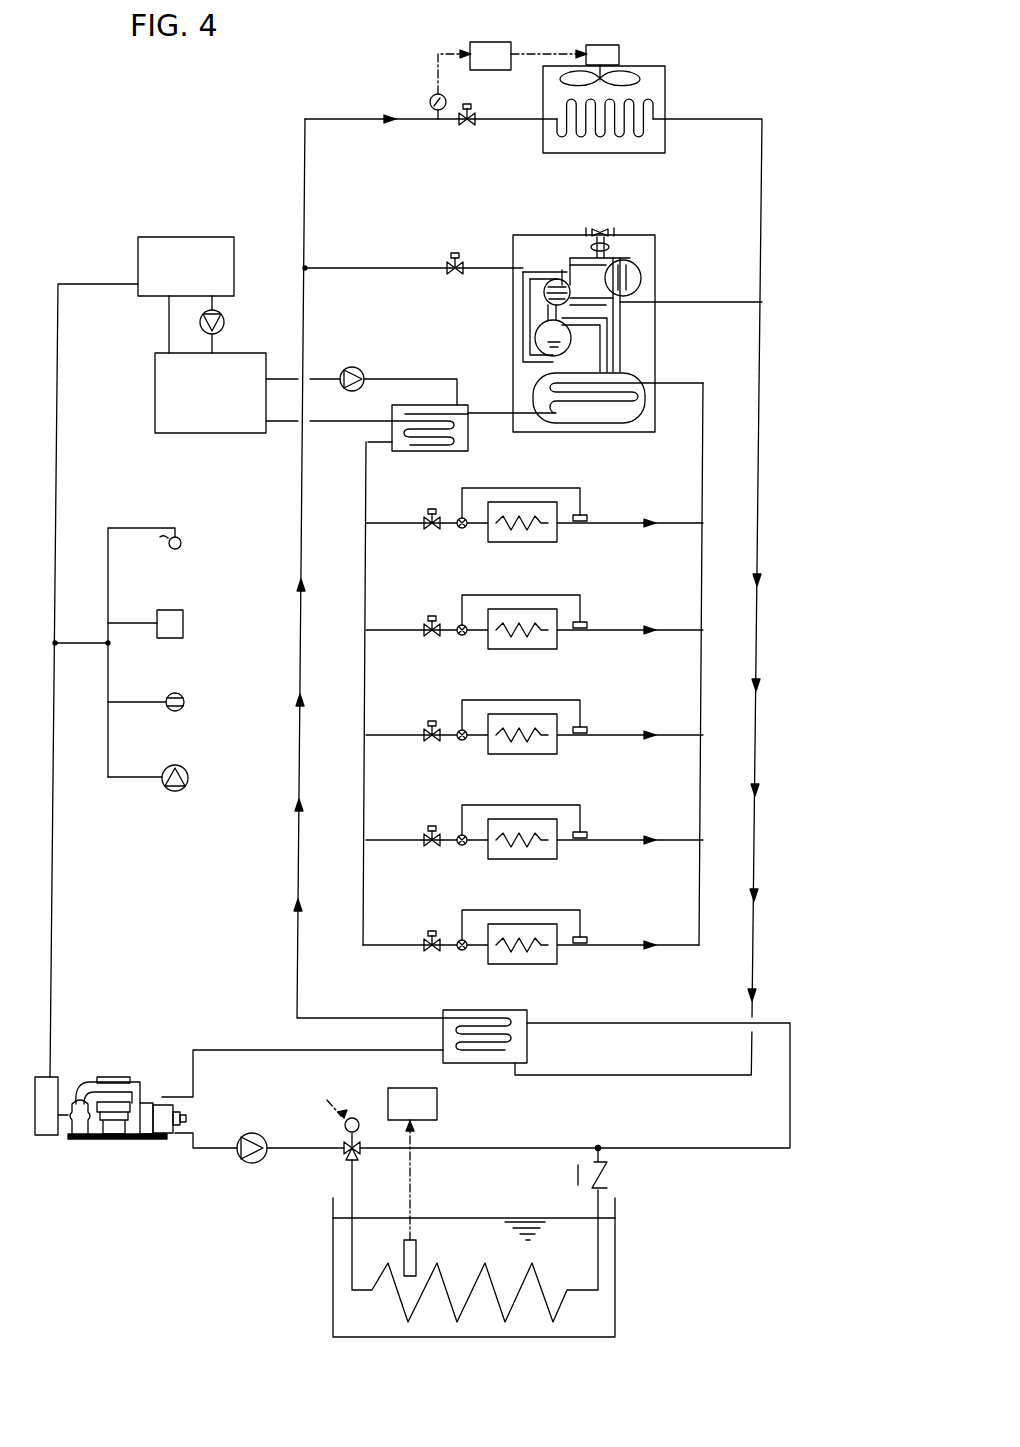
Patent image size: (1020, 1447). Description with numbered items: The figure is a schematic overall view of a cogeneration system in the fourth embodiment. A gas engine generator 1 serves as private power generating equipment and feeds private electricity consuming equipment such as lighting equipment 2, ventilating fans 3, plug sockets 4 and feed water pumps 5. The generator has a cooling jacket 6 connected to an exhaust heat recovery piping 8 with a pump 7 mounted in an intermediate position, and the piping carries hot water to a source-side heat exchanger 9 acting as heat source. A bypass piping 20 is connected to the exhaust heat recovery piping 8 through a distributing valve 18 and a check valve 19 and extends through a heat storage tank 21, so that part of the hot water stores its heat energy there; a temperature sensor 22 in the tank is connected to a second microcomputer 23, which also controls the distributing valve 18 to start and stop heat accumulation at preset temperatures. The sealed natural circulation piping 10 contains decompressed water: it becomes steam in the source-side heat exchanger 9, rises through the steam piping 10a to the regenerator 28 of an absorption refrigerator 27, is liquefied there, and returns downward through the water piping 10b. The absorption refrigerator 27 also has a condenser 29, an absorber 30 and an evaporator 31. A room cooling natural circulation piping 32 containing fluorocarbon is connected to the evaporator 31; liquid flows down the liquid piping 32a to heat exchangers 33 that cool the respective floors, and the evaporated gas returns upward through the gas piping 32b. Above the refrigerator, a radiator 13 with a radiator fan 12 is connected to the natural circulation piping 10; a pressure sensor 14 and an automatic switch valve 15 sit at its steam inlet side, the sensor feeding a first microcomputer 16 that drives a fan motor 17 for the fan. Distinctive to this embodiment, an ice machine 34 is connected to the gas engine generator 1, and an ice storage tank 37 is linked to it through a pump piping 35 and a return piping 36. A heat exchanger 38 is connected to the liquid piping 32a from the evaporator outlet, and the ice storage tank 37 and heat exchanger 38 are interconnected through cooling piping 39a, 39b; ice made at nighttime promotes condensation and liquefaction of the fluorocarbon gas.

The gas engine generator 1 is at (100, 1072).
The lighting equipment 2 is at (182, 541).
The ventilating fans 3 is at (186, 623).
The plug sockets 4 is at (184, 700).
The feed water pumps 5 is at (188, 772).
The cooling jacket 6 is at (163, 1140).
The pump 7 is at (255, 1133).
The exhaust heat recovery piping 8 is at (216, 1151).
The source-side heat exchanger 9 is at (527, 1045).
The natural circulation piping 10 is at (766, 700).
The steam piping 10a is at (300, 880).
The water piping 10b is at (668, 597).
The radiator fan 12 is at (644, 84).
The radiator 13 is at (648, 162).
The pressure sensor 14 is at (428, 102).
The automatic switch valve 15 is at (466, 128).
The first microcomputer 16 is at (495, 70).
The fan motor 17 is at (626, 53).
The distributing valve 18 is at (344, 1158).
The check valve 19 is at (606, 1175).
The bypass piping 20 is at (352, 1188).
The heat storage tank 21 is at (615, 1256).
The temperature sensor 22 is at (416, 1240).
The second microcomputer 23 is at (437, 1101).
The absorption refrigerator 27 is at (655, 354).
The regenerator 28 is at (513, 288).
The condenser 29 is at (642, 276).
The absorber 30 is at (535, 338).
The evaporator 31 is at (582, 425).
The room cooling natural circulation piping 32 is at (721, 460).
The liquid piping 32a is at (368, 570).
The gas piping 32b is at (702, 480).
The heat exchangers 33 is at (530, 544).
The ice machine 34 is at (200, 237).
The pump piping 35 is at (220, 330).
The return piping 36 is at (169, 322).
The ice storage tank 37 is at (155, 400).
The heat exchanger 38 is at (448, 452).
The cooling piping 39a is at (332, 372).
The cooling piping 39b is at (331, 428).